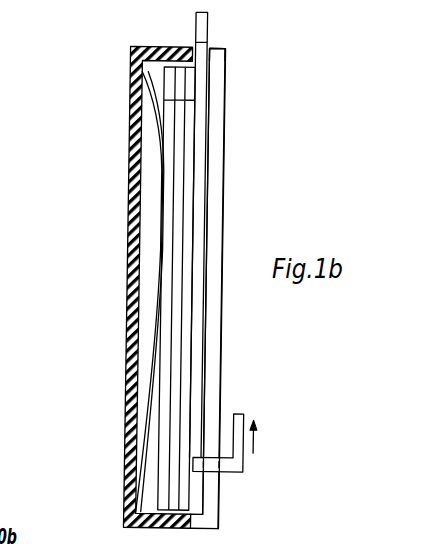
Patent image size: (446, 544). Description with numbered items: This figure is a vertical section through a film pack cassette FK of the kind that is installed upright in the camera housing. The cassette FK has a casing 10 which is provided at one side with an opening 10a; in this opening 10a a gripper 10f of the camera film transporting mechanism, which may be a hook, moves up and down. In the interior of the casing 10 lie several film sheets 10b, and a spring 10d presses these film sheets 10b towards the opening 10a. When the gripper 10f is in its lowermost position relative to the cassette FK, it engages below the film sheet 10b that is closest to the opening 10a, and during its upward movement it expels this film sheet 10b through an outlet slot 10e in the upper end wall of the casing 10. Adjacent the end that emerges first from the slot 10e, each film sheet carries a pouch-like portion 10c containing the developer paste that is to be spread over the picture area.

The casing 10 is at (128, 329).
The opening 10a is at (213, 401).
The film sheets 10b is at (187, 173).
The pouch-like portion 10c is at (203, 22).
The spring 10d is at (157, 217).
The outlet slot 10e is at (213, 46).
The gripper 10f is at (238, 451).
The film pack cassette FK is at (124, 129).